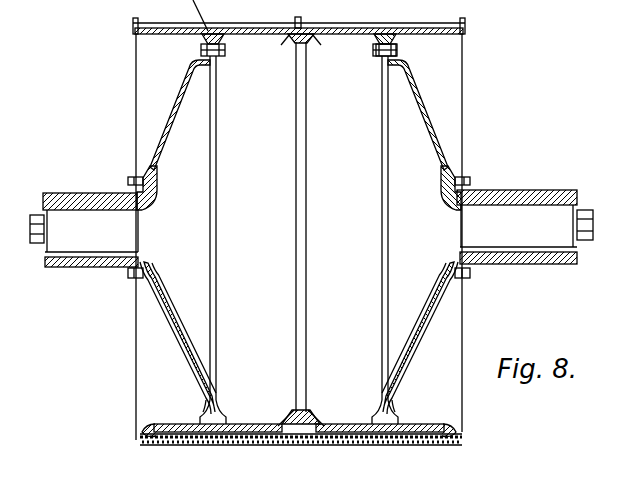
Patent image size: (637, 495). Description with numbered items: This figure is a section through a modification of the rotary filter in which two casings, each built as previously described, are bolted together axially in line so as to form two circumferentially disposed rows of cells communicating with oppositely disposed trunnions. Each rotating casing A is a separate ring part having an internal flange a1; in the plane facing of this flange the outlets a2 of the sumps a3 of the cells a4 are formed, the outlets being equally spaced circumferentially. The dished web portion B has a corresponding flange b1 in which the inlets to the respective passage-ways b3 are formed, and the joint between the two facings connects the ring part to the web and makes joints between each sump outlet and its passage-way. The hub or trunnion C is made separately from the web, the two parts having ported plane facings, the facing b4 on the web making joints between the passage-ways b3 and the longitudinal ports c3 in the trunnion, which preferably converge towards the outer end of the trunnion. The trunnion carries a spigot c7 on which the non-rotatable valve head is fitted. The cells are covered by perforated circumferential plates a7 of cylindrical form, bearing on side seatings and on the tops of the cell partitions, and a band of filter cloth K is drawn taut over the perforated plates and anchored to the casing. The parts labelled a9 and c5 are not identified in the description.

The rotating casing A is at (452, 88).
The casing end plate a9 is at (483, 408).
The internal flange a1 is at (219, 57).
The flange b1 is at (386, 46).
The dished web portion B is at (179, 97).
The flange c5 is at (157, 183).
The hub or trunnion C is at (502, 203).
The longitudinal ports c3 is at (517, 256).
The spigot c7 is at (585, 208).
The ported plane facing b4 is at (480, 290).
The passage-ways b3 is at (178, 319).
The outlets a2 is at (222, 407).
The sumps a3 is at (229, 424).
The band of filter cloth K is at (301, 458).
The perforated circumferential plate a7 is at (360, 441).
The cells a4 is at (430, 452).